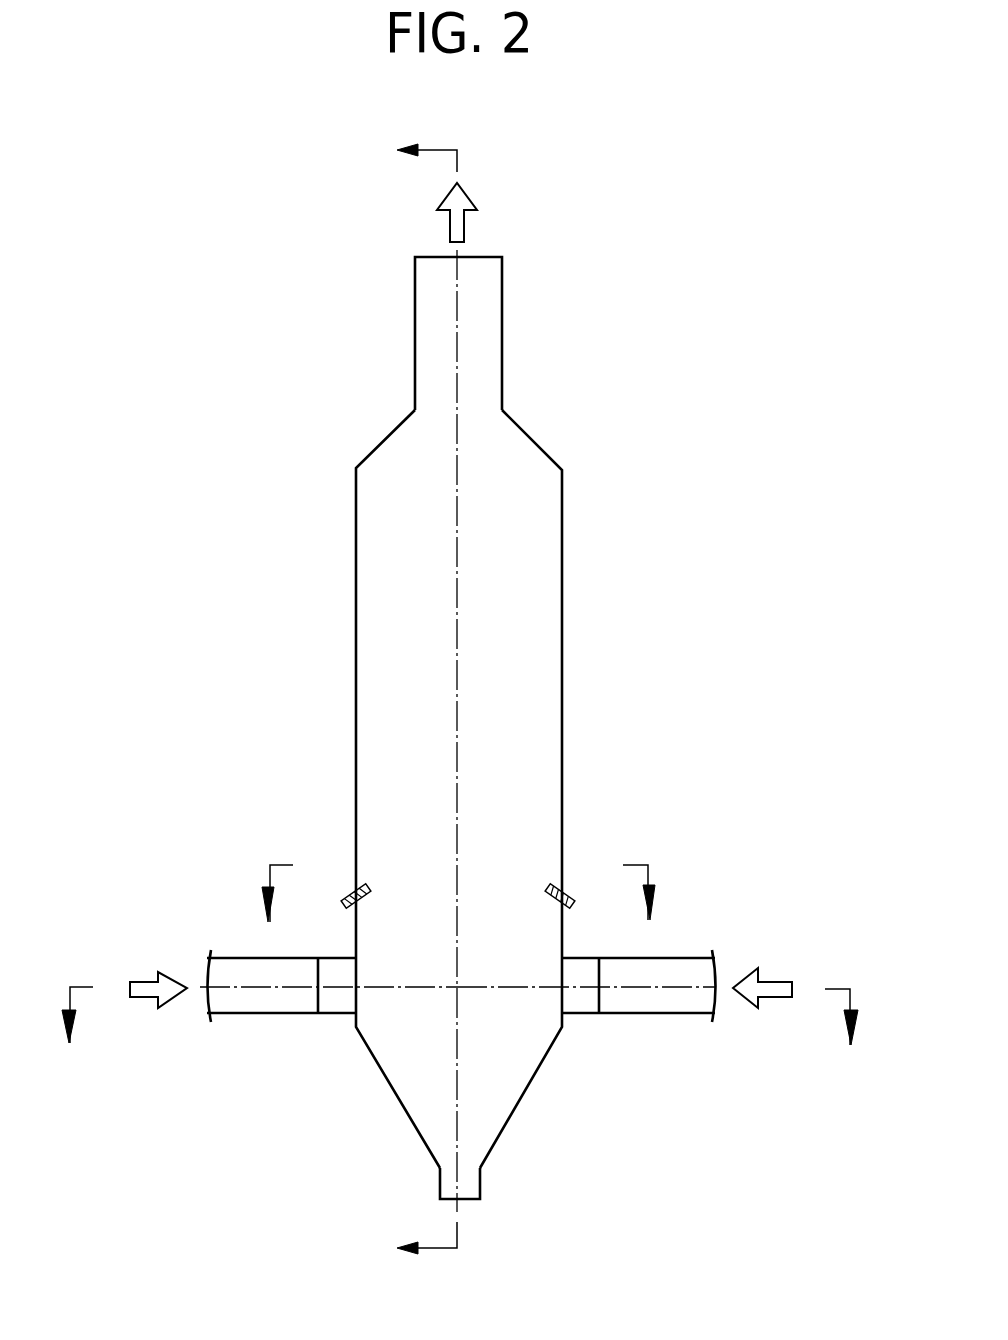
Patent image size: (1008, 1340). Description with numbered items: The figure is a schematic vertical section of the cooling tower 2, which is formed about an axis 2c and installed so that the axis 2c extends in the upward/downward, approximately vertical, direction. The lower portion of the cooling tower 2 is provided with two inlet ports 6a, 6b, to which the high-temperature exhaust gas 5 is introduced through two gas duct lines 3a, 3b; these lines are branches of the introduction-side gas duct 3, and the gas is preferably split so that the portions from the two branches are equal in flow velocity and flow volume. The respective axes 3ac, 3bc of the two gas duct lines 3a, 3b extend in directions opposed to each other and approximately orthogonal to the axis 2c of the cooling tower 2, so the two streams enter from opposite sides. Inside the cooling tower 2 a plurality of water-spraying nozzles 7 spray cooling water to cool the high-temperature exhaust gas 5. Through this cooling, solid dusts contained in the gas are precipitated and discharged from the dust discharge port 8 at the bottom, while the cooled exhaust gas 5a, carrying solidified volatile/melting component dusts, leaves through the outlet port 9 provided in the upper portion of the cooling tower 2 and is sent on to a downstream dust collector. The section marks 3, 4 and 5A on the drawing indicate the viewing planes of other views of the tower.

The cooling tower 2 is at (563, 514).
The axis 2c is at (457, 617).
The gas duct 3 is at (462, 1041).
The gas duct line 3a is at (223, 957).
The gas duct line 3b is at (697, 957).
The axis of gas duct line 3ac is at (237, 1015).
The axis of gas duct line 3bc is at (650, 992).
The section line 4 is at (460, 893).
The high-temperature exhaust gas 5 is at (145, 980).
The cooled exhaust gas 5a is at (465, 222).
The section line 5A is at (402, 700).
The inlet port 6a is at (335, 1003).
The inlet port 6b is at (575, 1018).
The water-spraying nozzle 7 is at (352, 890).
The dust discharge port 8 is at (481, 1182).
The outlet port 9 is at (415, 333).